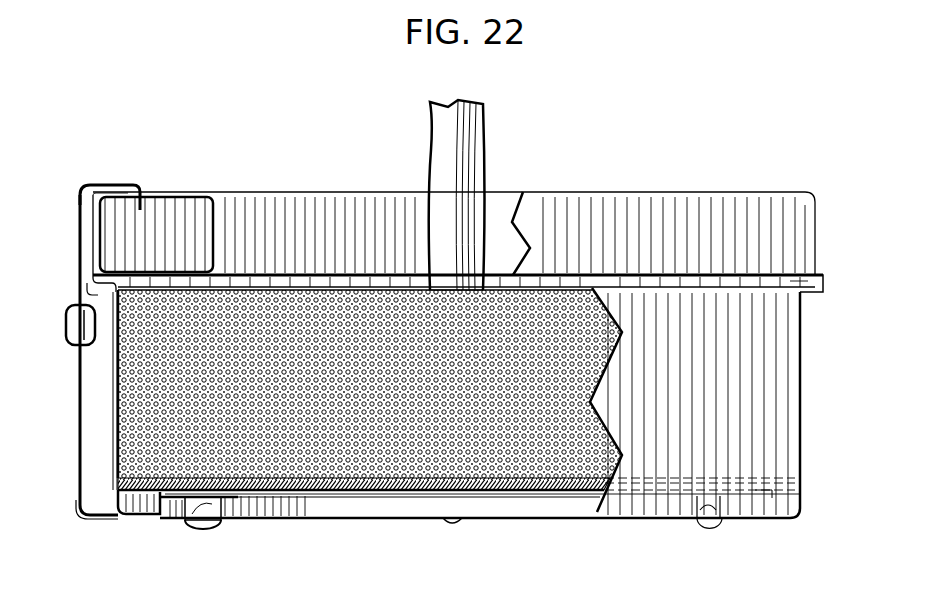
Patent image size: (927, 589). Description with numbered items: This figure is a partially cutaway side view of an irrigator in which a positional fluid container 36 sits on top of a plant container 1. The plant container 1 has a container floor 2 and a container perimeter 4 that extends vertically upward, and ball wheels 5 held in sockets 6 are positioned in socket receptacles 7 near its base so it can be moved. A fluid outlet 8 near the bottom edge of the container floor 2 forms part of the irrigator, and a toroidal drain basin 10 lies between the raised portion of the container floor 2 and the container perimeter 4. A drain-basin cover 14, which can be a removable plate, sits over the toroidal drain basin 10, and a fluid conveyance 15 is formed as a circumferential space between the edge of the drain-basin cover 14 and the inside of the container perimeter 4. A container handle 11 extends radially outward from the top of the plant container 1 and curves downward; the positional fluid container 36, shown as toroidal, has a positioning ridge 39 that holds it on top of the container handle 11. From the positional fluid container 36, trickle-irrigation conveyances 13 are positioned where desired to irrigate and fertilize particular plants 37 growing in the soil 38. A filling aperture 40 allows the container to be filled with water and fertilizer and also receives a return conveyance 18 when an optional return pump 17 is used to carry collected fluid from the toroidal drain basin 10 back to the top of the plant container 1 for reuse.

The plant container 1 is at (820, 527).
The container floor 2 is at (368, 465).
The container perimeter 4 is at (112, 397).
The ball wheels 5 is at (200, 523).
The sockets 6 is at (216, 500).
The socket receptacles 7 is at (295, 495).
The fluid outlet 8 is at (115, 516).
The toroidal drain basin 10 is at (136, 520).
The container handle 11 is at (92, 289).
The trickle-irrigation conveyances 13 is at (223, 260).
The drain-basin cover 14 is at (172, 476).
The fluid conveyance 15 is at (120, 479).
The return pump 17 is at (72, 330).
The return conveyance 18 is at (115, 188).
The positional fluid container 36 is at (208, 197).
The plants 37 is at (478, 122).
The soil 38 is at (553, 332).
The positioning ridge 39 is at (108, 274).
The filling aperture 40 is at (163, 192).